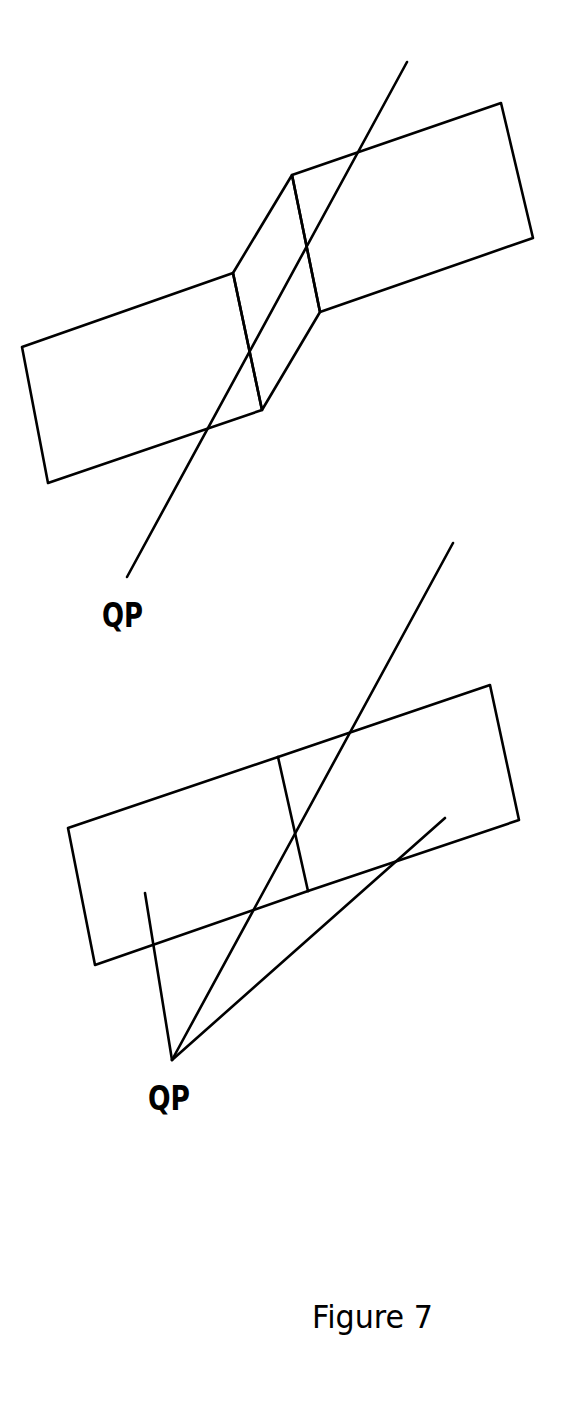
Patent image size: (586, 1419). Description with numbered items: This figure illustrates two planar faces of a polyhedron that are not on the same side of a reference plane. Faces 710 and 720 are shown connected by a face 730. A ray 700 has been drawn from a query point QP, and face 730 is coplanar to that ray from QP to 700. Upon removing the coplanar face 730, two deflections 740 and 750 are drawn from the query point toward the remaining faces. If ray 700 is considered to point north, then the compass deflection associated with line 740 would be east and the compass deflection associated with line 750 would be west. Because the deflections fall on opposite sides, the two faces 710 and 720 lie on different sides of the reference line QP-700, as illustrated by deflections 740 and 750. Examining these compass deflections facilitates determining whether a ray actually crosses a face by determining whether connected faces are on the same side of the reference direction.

The ray 700 is at (310, 537).
The face 710 is at (165, 619).
The face 720 is at (405, 497).
The face 730 is at (292, 355).
The deflection 740 is at (340, 908).
The deflection 750 is at (162, 1008).